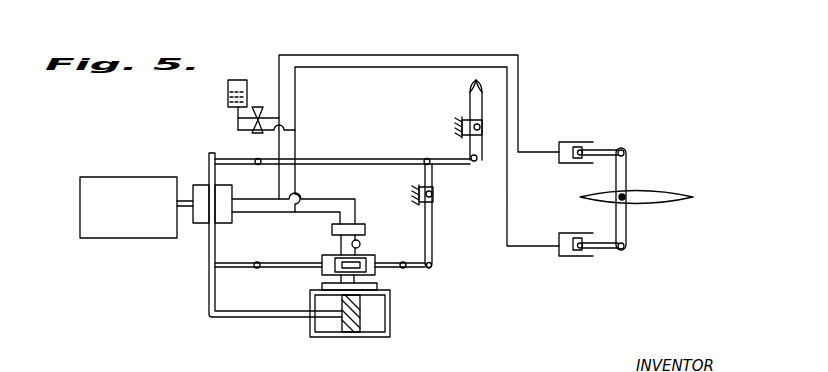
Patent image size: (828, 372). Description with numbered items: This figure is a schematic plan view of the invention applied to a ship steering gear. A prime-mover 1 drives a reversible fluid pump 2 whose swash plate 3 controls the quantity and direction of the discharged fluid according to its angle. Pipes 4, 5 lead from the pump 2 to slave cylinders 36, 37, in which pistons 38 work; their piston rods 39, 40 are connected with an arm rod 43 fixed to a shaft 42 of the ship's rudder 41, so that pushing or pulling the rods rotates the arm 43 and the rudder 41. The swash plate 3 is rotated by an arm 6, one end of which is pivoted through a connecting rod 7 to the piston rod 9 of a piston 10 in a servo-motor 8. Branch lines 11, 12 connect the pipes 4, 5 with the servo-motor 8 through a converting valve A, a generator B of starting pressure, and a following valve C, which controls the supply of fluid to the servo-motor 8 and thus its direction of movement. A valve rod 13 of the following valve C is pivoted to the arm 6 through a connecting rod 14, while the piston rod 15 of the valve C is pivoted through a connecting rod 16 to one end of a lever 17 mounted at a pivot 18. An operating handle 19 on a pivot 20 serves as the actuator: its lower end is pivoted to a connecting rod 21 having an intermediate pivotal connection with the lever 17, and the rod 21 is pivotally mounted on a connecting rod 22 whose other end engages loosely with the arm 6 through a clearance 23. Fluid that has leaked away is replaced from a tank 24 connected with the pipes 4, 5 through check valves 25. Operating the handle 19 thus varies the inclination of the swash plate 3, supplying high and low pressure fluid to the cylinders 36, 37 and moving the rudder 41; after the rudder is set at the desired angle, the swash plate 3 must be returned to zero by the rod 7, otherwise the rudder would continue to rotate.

The prime-mover 1 is at (121, 182).
The reversible fluid pump 2 is at (198, 226).
The swash plate 3 is at (222, 218).
The pipe 4 is at (337, 54).
The pipe 5 is at (384, 66).
The arm 6 is at (208, 293).
The connecting rod 7 is at (235, 320).
The servo-motor 8 is at (330, 338).
The piston rod 9 is at (288, 319).
The piston 10 is at (355, 320).
The branch line 11 is at (315, 211).
The branch line 12 is at (348, 199).
The valve rod 13 is at (285, 268).
The connecting rod 14 is at (238, 268).
The piston rod 15 is at (388, 268).
The connecting rod 16 is at (425, 270).
The lever 17 is at (433, 236).
The pivot 18 is at (434, 194).
The operating handle 19 is at (469, 96).
The pivot 20 is at (479, 139).
The connecting rod 21 is at (402, 158).
The connecting rod 22 is at (237, 160).
The clearance 23 is at (208, 155).
The tank 24 is at (227, 85).
The check valve 25 is at (266, 109).
The slave cylinder 36 is at (566, 140).
The slave cylinder 37 is at (563, 258).
The piston 38 is at (580, 142).
The piston rod 39 is at (606, 149).
The piston rod 40 is at (607, 250).
The ship's rudder 41 is at (676, 196).
The shaft 42 is at (626, 201).
The arm rod 43 is at (621, 172).
The converting valve A is at (365, 229).
The generator of starting pressure B is at (361, 245).
The following valve C is at (321, 257).